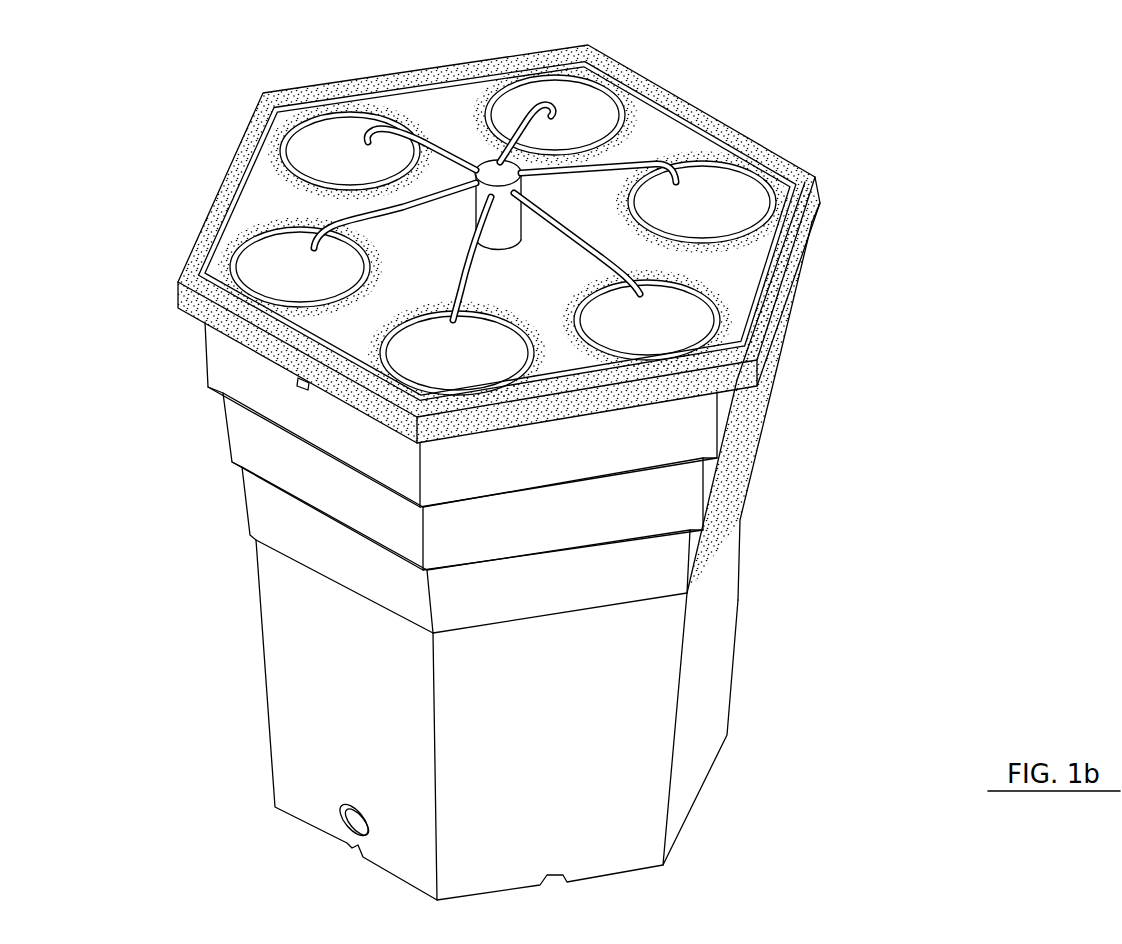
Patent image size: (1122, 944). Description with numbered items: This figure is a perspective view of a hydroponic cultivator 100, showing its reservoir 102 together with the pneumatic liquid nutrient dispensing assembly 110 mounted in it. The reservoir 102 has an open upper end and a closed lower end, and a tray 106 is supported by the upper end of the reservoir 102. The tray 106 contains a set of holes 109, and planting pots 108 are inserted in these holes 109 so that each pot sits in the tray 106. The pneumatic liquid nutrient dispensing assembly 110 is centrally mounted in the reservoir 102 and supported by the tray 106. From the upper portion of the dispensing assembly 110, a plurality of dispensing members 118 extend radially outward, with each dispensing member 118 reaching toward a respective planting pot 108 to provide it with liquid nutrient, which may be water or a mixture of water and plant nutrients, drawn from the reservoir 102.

The hydroponic cultivator 100 is at (880, 83).
The reservoir 102 is at (746, 530).
The tray 106 is at (292, 200).
The planting pots 108 is at (285, 222).
The holes 109 is at (730, 246).
The pneumatic liquid nutrient dispensing assembly 110 is at (478, 156).
The dispensing members 118 is at (633, 160).